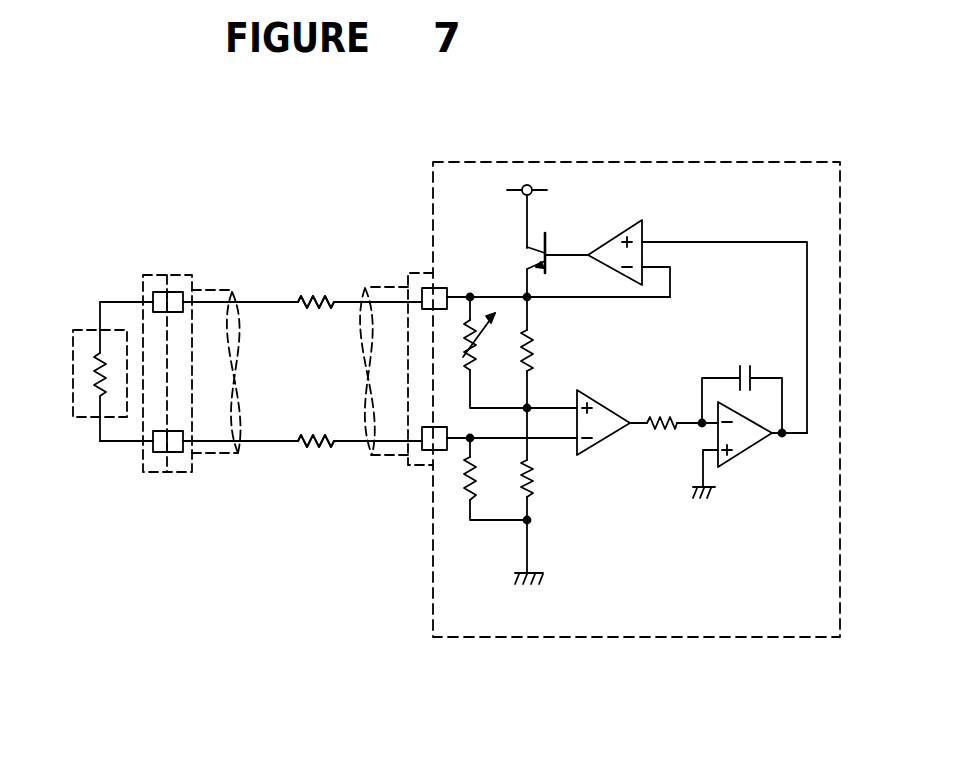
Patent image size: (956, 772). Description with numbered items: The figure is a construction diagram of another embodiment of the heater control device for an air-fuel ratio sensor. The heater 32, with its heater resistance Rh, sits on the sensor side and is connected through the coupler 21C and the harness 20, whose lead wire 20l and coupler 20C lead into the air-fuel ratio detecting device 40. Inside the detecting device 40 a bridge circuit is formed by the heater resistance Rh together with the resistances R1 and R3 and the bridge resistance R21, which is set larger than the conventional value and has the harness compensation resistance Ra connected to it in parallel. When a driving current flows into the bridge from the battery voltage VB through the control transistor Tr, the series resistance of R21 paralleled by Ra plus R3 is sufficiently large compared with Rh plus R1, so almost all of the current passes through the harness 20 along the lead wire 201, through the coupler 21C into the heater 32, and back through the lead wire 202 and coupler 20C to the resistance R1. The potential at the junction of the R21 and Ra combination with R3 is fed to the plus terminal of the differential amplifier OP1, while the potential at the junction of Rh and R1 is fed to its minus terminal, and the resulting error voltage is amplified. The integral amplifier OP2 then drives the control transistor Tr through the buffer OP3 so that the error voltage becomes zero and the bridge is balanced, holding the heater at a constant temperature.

The heater resistance Rh is at (82, 385).
The heater 32 is at (82, 330).
The coupler 21C is at (147, 278).
The coupler 20C is at (187, 276).
The harness 20 is at (398, 222).
The lead wire 20l is at (328, 256).
The lead wire 201 is at (305, 298).
The lead wire 202 is at (308, 436).
The air-fuel ratio detecting device 40 is at (612, 638).
The battery voltage VB is at (550, 210).
The control transistor Tr is at (530, 258).
The buffer OP3 is at (697, 313).
The harness compensation resistance Ra is at (520, 352).
The bridge resistance R21 is at (562, 352).
The resistance R1 is at (498, 457).
The resistance R3 is at (535, 476).
The differential amplifier OP1 is at (647, 433).
The integral amplifier OP2 is at (750, 432).